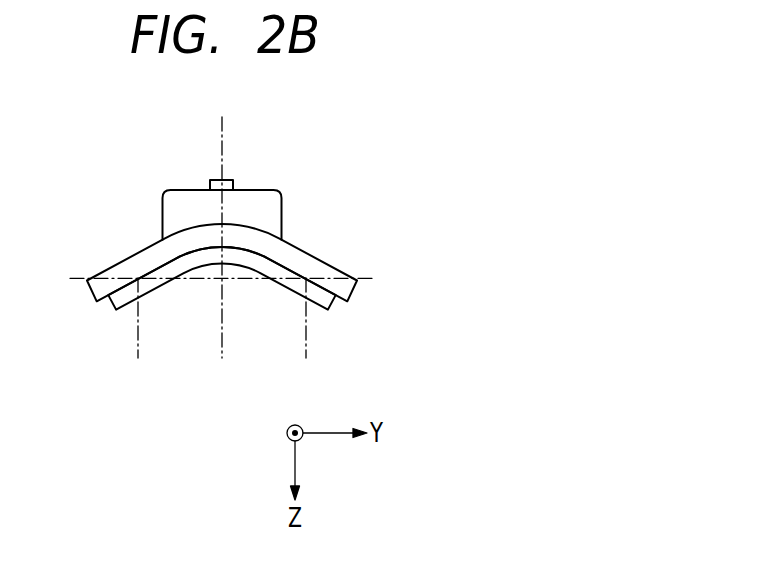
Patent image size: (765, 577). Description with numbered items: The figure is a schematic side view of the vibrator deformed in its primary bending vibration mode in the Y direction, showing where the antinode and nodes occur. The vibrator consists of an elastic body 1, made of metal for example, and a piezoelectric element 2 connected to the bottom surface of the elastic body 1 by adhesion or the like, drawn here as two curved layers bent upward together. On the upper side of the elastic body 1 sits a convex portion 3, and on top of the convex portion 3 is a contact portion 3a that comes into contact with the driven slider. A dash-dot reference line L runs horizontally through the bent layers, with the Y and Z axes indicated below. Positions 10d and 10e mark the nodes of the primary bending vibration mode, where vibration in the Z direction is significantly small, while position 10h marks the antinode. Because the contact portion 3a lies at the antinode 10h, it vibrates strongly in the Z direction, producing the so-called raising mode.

The elastic body 1 is at (357, 295).
The piezoelectric element 2 is at (327, 300).
The convex portion 3 is at (283, 205).
The contact portion 3a is at (223, 180).
The reference line L is at (230, 278).
The node position 10d is at (139, 336).
The antinode position 10h is at (222, 255).
The node position 10e is at (306, 336).